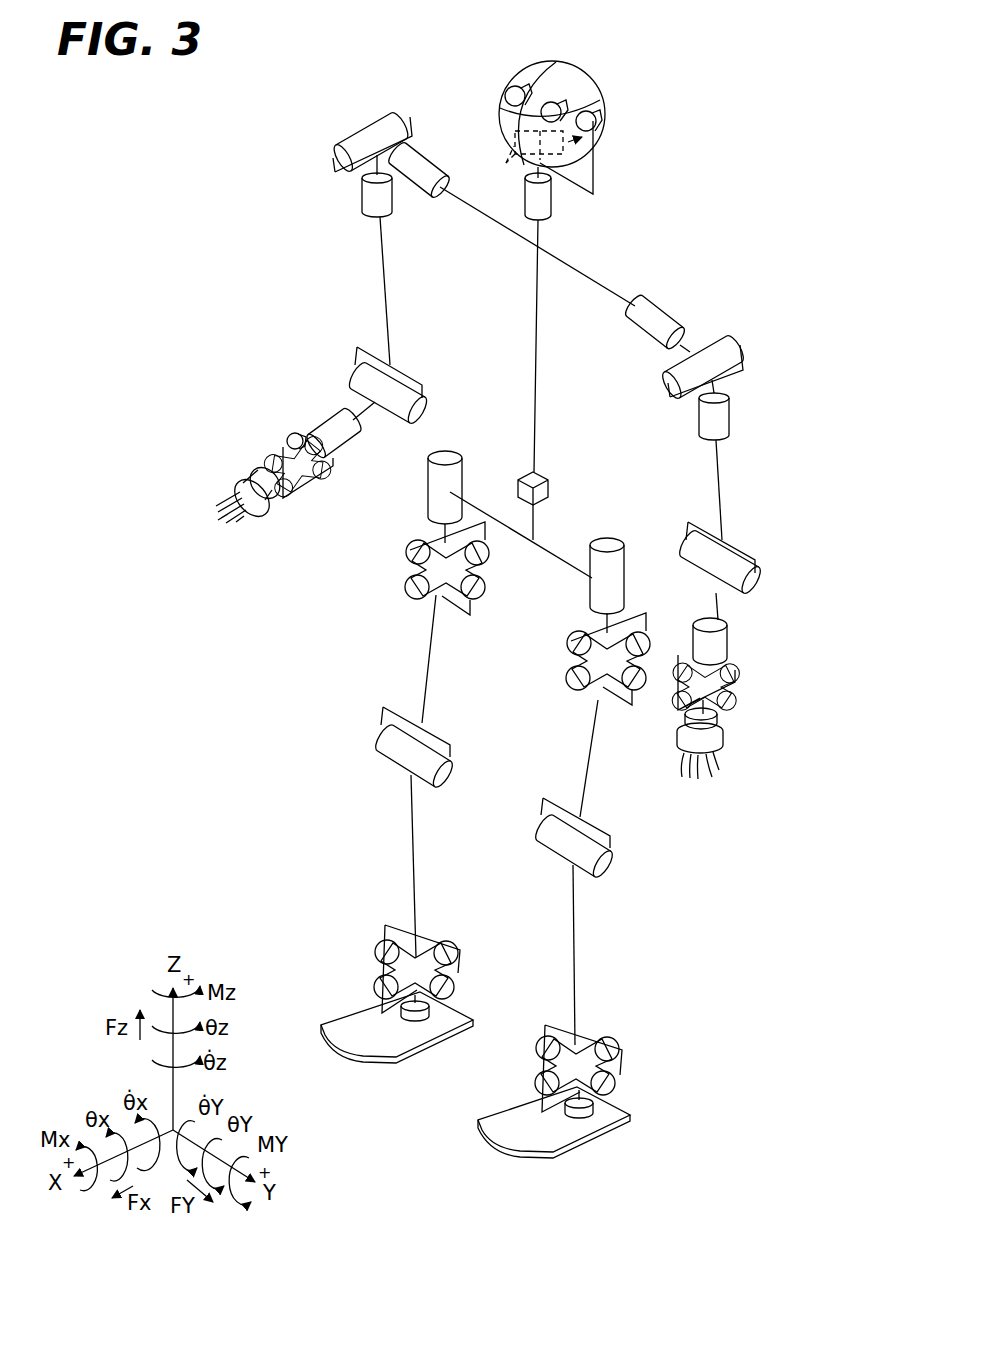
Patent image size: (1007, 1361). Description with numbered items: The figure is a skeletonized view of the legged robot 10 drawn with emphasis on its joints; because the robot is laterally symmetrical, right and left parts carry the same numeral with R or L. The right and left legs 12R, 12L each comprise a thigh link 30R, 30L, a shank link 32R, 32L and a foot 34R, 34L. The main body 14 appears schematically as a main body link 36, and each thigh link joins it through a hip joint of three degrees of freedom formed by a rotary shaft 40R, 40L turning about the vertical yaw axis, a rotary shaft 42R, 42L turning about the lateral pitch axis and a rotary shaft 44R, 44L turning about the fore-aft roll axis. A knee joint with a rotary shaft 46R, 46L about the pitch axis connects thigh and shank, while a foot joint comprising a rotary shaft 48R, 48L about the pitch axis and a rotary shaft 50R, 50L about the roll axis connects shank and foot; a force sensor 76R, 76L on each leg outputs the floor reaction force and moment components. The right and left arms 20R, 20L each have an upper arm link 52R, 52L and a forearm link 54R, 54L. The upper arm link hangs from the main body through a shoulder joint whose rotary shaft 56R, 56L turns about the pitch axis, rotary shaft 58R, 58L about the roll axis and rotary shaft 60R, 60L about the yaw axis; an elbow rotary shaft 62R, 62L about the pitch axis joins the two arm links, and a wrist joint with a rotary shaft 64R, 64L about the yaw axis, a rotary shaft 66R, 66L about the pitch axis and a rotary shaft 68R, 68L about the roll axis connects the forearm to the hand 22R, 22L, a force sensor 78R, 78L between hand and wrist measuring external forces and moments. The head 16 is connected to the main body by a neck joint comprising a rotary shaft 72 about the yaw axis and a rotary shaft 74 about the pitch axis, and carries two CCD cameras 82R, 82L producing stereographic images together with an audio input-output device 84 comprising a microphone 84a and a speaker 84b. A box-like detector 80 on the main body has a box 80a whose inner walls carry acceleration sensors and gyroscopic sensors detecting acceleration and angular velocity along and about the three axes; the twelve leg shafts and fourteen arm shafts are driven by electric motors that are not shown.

The robot 10 is at (657, 213).
The right leg 12R is at (384, 778).
The left leg 12L is at (666, 975).
The main body 14 is at (541, 420).
The head 16 is at (528, 62).
The right arm 20R is at (352, 325).
The left arm 20L is at (750, 533).
The right hand 22R is at (276, 508).
The left hand 22L is at (722, 753).
The right thigh link 30R is at (426, 668).
The left thigh link 30L is at (590, 778).
The right shank link 32R is at (412, 862).
The left shank link 32L is at (577, 940).
The right foot 34R is at (374, 1062).
The left foot 34L is at (550, 1152).
The main body link 36 is at (581, 380).
The hip joint rotary shaft (Z-axis) 40R is at (452, 456).
The hip joint rotary shaft (Z-axis) 40L is at (600, 545).
The hip joint rotary shaft (Y-axis) 42R is at (412, 548).
The hip joint rotary shaft (Y-axis) 42L is at (572, 640).
The hip joint rotary shaft (X-axis) 44R is at (408, 592).
The hip joint rotary shaft (X-axis) 44L is at (566, 688).
The knee joint rotary shaft 46R is at (446, 782).
The knee joint rotary shaft 46L is at (612, 872).
The foot joint rotary shaft (Y-axis) 48R is at (456, 990).
The foot joint rotary shaft (Y-axis) 48L is at (620, 1078).
The foot joint rotary shaft (X-axis) 50R is at (445, 940).
The foot joint rotary shaft (X-axis) 50L is at (602, 1042).
The upper arm link 52R is at (389, 300).
The upper arm link 52L is at (722, 476).
The forearm link 54R is at (352, 405).
The forearm link 54L is at (722, 609).
The shoulder joint rotary shaft (Y-axis) 56R is at (462, 143).
The shoulder joint rotary shaft (Y-axis) 56L is at (652, 305).
The shoulder joint rotary shaft (X-axis) 58R is at (345, 131).
The shoulder joint rotary shaft (X-axis) 58L is at (723, 345).
The shoulder joint rotary shaft (Z-axis) 60R is at (362, 200).
The shoulder joint rotary shaft (Z-axis) 60L is at (730, 416).
The elbow rotary shaft 62R is at (422, 408).
The elbow rotary shaft 62L is at (758, 582).
The wrist joint rotary shaft (Z-axis) 64R is at (344, 447).
The wrist joint rotary shaft (Z-axis) 64L is at (731, 645).
The wrist joint rotary shaft (Y-axis) 66R is at (270, 455).
The wrist joint rotary shaft (Y-axis) 66L is at (735, 706).
The wrist joint rotary shaft (X-axis) 68R is at (293, 435).
The wrist joint rotary shaft (X-axis) 68L is at (737, 683).
The neck joint rotary shaft (Z-axis) 72 is at (546, 206).
The neck joint rotary shaft (Y-axis) 74 is at (600, 120).
The force sensor 76R is at (426, 1022).
The force sensor 76L is at (598, 1117).
The force sensor 78R is at (258, 482).
The force sensor 78L is at (726, 732).
The detector 80 is at (552, 468).
The box 80a is at (548, 488).
The CCD camera 82R is at (511, 93).
The CCD camera 82L is at (565, 100).
The audio input-output device 84 is at (595, 157).
The microphone 84a is at (593, 184).
The speaker 84b is at (506, 165).